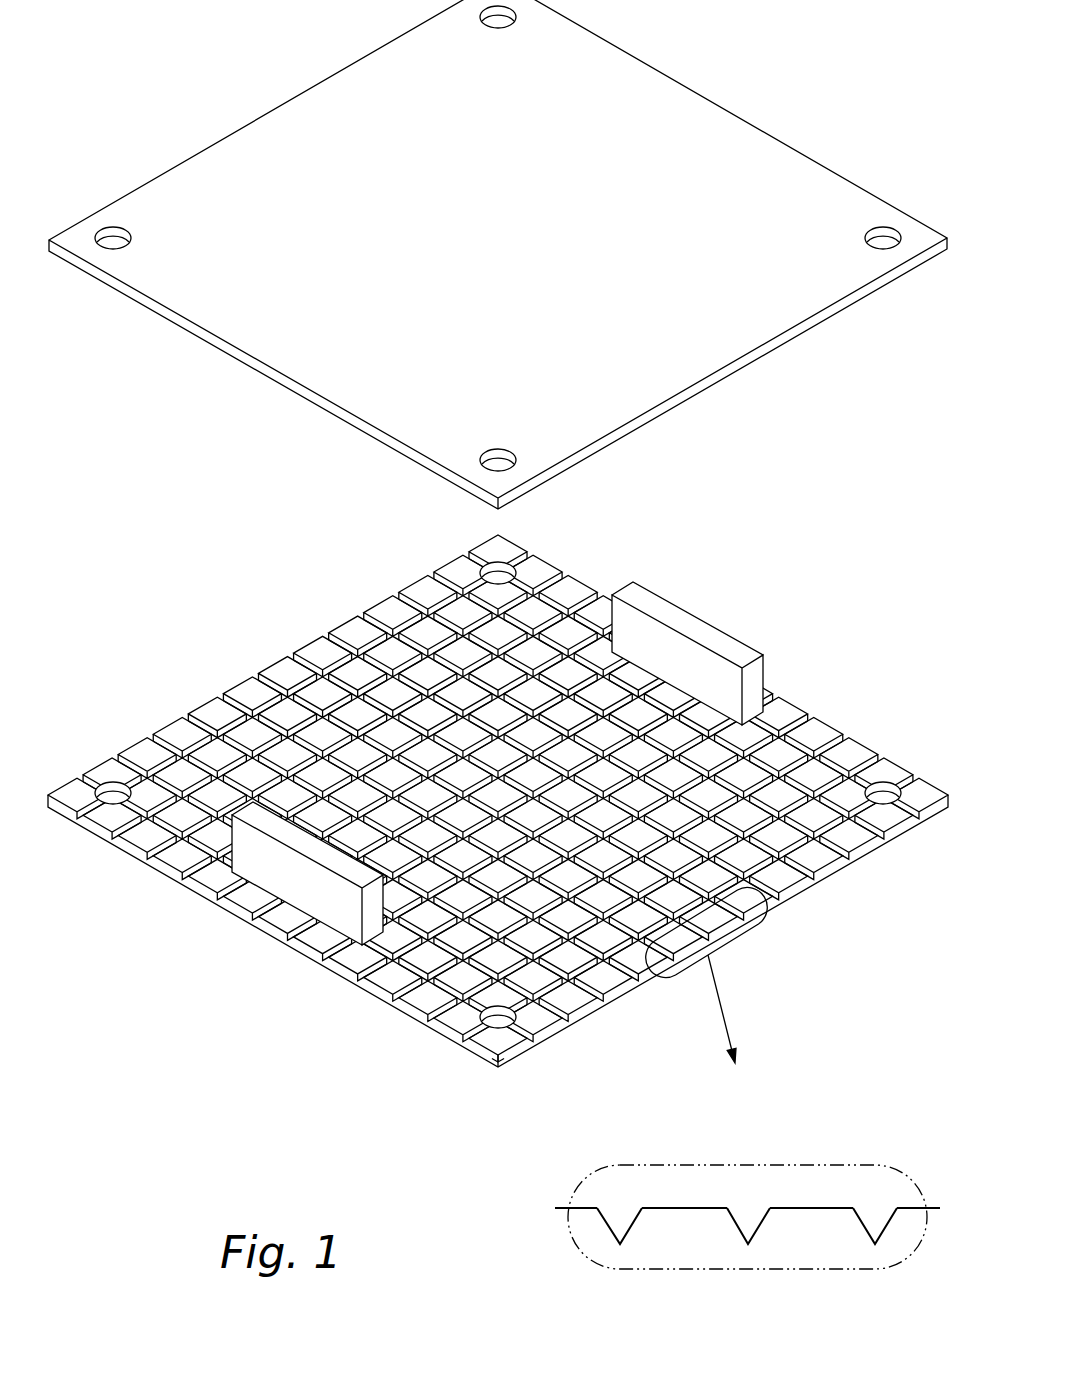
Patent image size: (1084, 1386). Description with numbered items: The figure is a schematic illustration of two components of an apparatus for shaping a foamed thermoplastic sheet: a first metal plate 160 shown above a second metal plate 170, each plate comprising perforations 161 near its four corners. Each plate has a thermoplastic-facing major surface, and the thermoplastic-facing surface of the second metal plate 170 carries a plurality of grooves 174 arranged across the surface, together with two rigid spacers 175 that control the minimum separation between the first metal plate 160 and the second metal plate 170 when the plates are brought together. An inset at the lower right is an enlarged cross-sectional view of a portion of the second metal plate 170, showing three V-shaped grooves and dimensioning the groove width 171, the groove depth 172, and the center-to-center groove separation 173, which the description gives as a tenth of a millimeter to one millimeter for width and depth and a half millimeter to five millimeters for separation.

The first metal plate 160 is at (686, 80).
The perforations 161 is at (113, 228).
The second metal plate 170 is at (259, 656).
The groove width 171 is at (897, 1102).
The groove depth 172 is at (497, 1208).
The center-to-center groove separation 173 is at (748, 1228).
The grooves 174 is at (415, 963).
The rigid spacers 175 is at (710, 642).